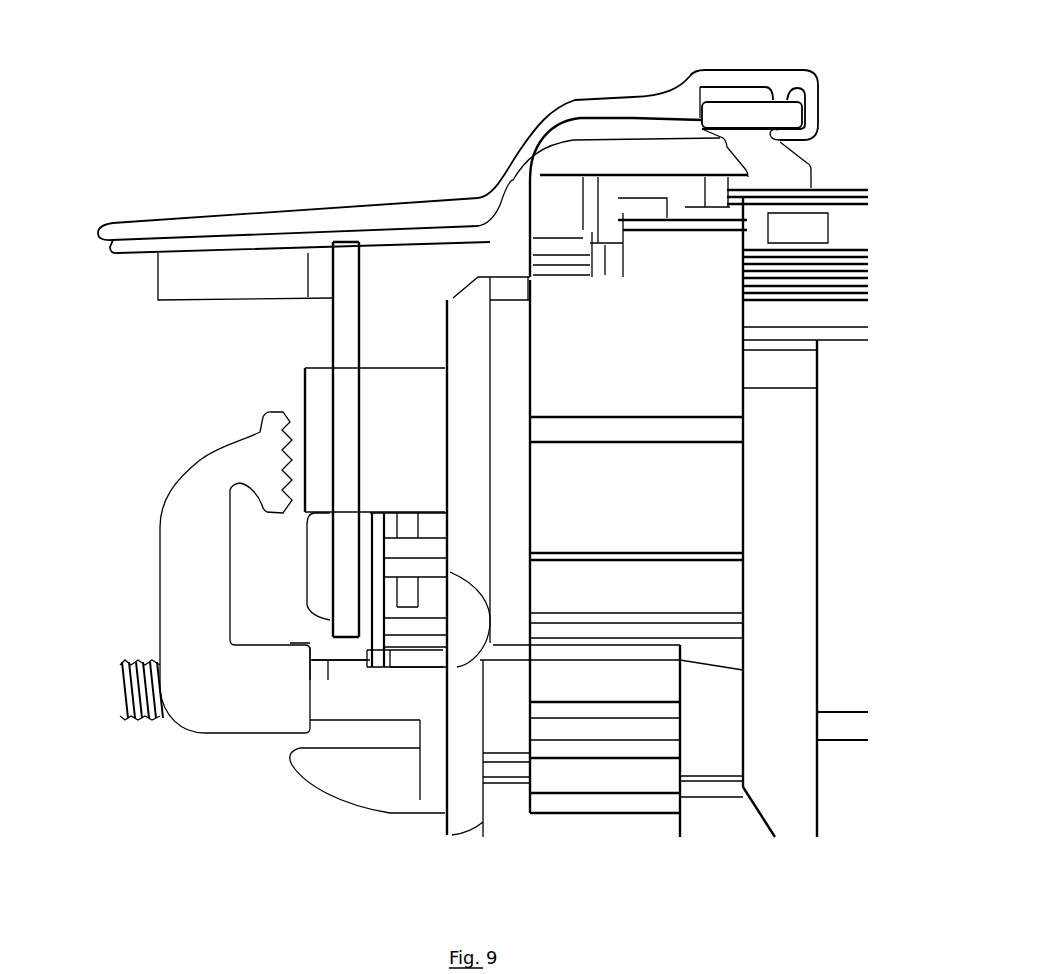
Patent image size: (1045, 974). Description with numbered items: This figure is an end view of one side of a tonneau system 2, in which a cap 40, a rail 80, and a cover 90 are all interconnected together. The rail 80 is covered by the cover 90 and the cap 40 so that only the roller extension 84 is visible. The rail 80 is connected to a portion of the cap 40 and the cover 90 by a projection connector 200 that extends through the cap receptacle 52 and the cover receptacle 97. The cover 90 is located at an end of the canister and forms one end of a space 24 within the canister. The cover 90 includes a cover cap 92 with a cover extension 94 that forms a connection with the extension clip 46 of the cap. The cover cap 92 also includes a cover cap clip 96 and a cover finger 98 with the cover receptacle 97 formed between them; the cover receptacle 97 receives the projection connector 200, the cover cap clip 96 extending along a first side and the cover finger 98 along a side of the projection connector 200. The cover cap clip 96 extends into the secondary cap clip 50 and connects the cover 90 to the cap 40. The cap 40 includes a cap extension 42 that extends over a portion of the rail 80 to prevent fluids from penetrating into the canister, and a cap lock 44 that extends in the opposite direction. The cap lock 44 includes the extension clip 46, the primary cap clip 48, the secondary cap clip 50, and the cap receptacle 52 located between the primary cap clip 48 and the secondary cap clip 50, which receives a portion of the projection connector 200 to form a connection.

The tonneau system 2 is at (95, 80).
The space 24 is at (835, 620).
The cap 40 is at (255, 120).
The cap extension 42 is at (238, 224).
The cap lock 44 is at (652, 72).
The extension clip 46 is at (485, 240).
The primary cap clip 48 is at (781, 135).
The secondary cap clip 50 is at (782, 97).
The cap receptacle 52 is at (810, 108).
The rail 80 is at (748, 204).
The roller extension 84 is at (183, 247).
The cover 90 is at (475, 433).
The cover cap 92 is at (527, 160).
The cover extension 94 is at (488, 225).
The cover cap clip 96 is at (757, 97).
The cover receptacle 97 is at (725, 123).
The cover finger 98 is at (720, 140).
The projection connector 200 is at (688, 117).